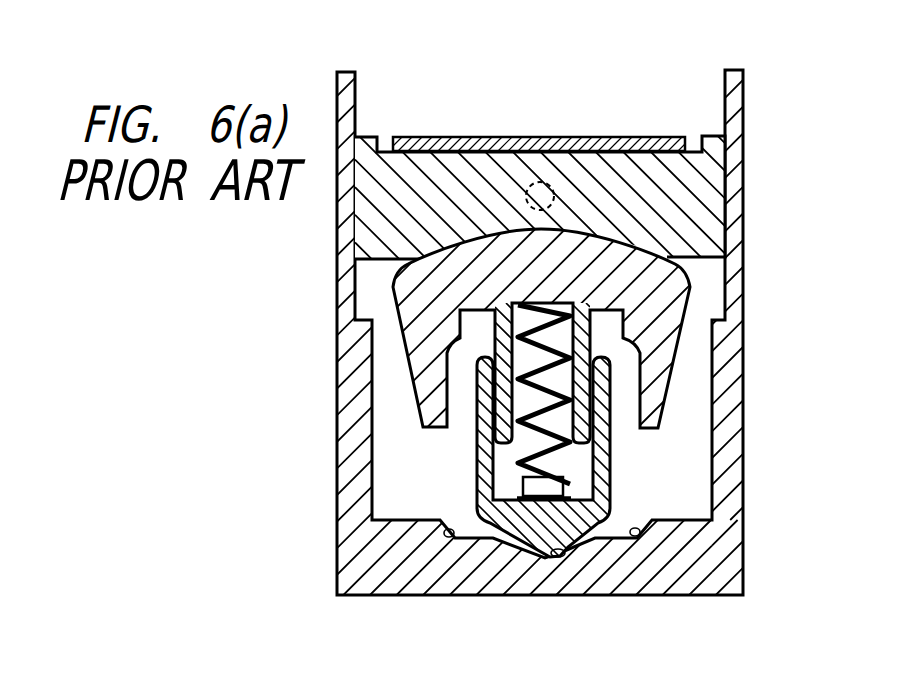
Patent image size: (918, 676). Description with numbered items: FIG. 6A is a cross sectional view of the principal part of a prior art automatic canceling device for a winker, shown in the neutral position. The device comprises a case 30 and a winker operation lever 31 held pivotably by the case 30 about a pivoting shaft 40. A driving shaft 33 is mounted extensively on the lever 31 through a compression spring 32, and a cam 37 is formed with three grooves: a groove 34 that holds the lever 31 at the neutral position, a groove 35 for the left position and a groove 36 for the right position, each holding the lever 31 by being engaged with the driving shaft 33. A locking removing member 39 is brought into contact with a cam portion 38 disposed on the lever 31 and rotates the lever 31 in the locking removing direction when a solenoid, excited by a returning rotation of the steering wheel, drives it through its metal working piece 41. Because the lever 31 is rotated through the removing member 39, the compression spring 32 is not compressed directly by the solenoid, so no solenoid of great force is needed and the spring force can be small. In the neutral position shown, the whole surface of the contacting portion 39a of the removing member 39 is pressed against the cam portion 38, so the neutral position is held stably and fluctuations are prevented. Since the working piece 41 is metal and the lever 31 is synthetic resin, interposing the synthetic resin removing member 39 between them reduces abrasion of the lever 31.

The case 30 is at (752, 539).
The winker operation lever 31 is at (417, 382).
The compression spring 32 is at (592, 469).
The driving shaft 33 is at (612, 403).
The groove 34 is at (563, 557).
The groove 35 is at (448, 538).
The groove 36 is at (640, 537).
The cam 37 is at (456, 508).
The cam portion 38 is at (605, 233).
The locking removing member 39 is at (685, 173).
The contacting portion 39a is at (575, 230).
The pivoting shaft 40 is at (530, 184).
The working piece 41 is at (422, 137).